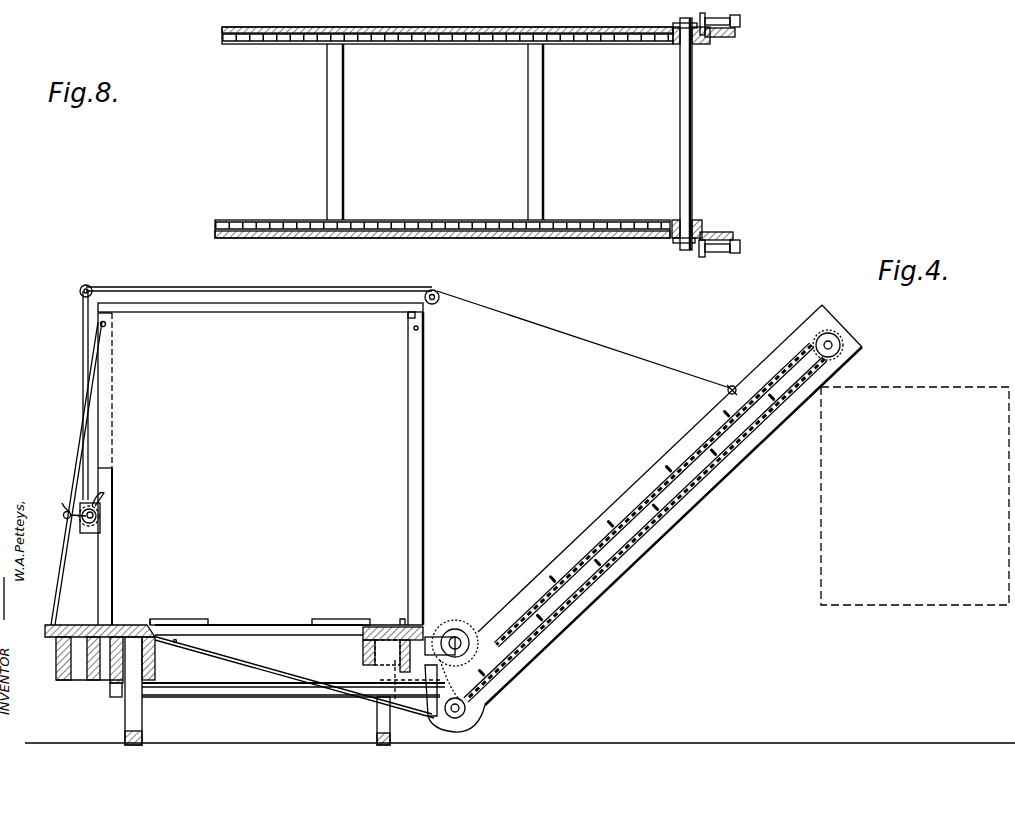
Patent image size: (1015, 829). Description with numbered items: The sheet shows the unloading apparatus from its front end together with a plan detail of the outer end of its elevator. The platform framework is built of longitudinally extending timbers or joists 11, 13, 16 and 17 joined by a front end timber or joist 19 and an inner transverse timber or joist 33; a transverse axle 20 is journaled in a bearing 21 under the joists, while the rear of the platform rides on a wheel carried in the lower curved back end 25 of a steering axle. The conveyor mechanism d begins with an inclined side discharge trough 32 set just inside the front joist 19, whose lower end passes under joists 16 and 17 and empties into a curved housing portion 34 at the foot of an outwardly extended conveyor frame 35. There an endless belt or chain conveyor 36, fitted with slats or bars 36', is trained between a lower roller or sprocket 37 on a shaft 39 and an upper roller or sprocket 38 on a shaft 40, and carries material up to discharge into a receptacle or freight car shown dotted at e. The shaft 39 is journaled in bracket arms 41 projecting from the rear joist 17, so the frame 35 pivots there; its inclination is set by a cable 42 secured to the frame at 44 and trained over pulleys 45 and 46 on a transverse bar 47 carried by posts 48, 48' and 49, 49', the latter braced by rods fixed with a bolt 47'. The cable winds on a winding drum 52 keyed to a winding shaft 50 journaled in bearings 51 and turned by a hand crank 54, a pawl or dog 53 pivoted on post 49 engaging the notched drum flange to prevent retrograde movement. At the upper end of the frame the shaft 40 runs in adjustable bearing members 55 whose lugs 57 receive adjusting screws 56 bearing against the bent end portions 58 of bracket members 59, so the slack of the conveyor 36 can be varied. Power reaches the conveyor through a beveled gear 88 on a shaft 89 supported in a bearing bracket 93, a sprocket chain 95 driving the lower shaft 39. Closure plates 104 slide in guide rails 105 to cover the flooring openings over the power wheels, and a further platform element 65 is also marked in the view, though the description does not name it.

In FIG. 4, the longitudinally extending timber or joist 11 is at (60, 681).
In FIG. 4, the longitudinally extending timber or joist 13 is at (90, 681).
In FIG. 4, the longitudinally extending timber or joist 16 is at (363, 654).
In FIG. 4, the rear side timber or joist 17 is at (399, 625).
In FIG. 4, the front end timber or joist 19 is at (110, 681).
In FIG. 4, the axle 20 is at (293, 698).
In FIG. 4, the bearing 21 is at (113, 698).
In FIG. 4, the lower curved back end of steering axle 25 is at (142, 729).
In FIG. 4, the side discharge trough 32 is at (240, 682).
In FIG. 4, the inner transversely extending timber or joist 33 is at (197, 689).
In FIG. 4, the curved housing portion 34 is at (481, 723).
In FIG. 8, the conveyor frame 35 is at (455, 27).
In FIG. 4, the conveyor frame 35 is at (627, 490).
In FIG. 8, the endless belt or chain conveyor 36 is at (442, 215).
In FIG. 4, the endless belt or chain conveyor 36 is at (627, 535).
In FIG. 8, the slats or bars 36' is at (435, 132).
In FIG. 4, the slats or bars 36' is at (640, 493).
In FIG. 4, the roller or sprocket 37 is at (437, 716).
In FIG. 8, the roller or sprocket 38 is at (677, 45).
In FIG. 4, the roller or sprocket 38 is at (843, 350).
In FIG. 4, the lower conveyor shaft 39 is at (455, 718).
In FIG. 8, the upper conveyor shaft 40 is at (693, 132).
In FIG. 4, the upper conveyor shaft 40 is at (838, 339).
In FIG. 4, the bracket arm 41 is at (426, 680).
In FIG. 4, the cable 42 is at (590, 340).
In FIG. 4, the cable attachment point 44 is at (733, 386).
In FIG. 4, the sheave or pulley 45 is at (437, 303).
In FIG. 4, the sheave or pulley 46 is at (81, 283).
In FIG. 4, the transversely extending bar 47 is at (259, 311).
In FIG. 4, the bolt 47' is at (113, 395).
In FIG. 4, the post 48 is at (399, 468).
In FIG. 4, the post 48' is at (397, 362).
In FIG. 4, the post 49 is at (119, 546).
In FIG. 4, the post 49' is at (121, 390).
In FIG. 4, the winding shaft 50 is at (89, 527).
In FIG. 4, the bearing 51 is at (94, 514).
In FIG. 4, the winding drum 52 is at (70, 519).
In FIG. 4, the pawl or dog 53 is at (105, 494).
In FIG. 4, the hand crank 54 is at (70, 510).
In FIG. 8, the adjustable bearing member 55 is at (675, 25).
In FIG. 8, the adjusting screw or bolt 56 is at (716, 18).
In FIG. 8, the lug or ear 57 is at (701, 15).
In FIG. 8, the angularly bent end portion 58 is at (740, 19).
In FIG. 8, the bracket member 59 is at (725, 38).
In FIG. 4, the table top 65 is at (262, 624).
In FIG. 4, the beveled gear 88 is at (464, 621).
In FIG. 4, the shaft 89 is at (462, 639).
In FIG. 4, the bearing bracket 93 is at (437, 637).
In FIG. 4, the sprocket chain 95 is at (472, 637).
In FIG. 4, the closure plate 104 is at (193, 619).
In FIG. 4, the guide rail or pleat 105 is at (150, 621).
In FIG. 4, the conveyor mechanism d is at (495, 719).
In FIG. 4, the receptacle e is at (915, 496).